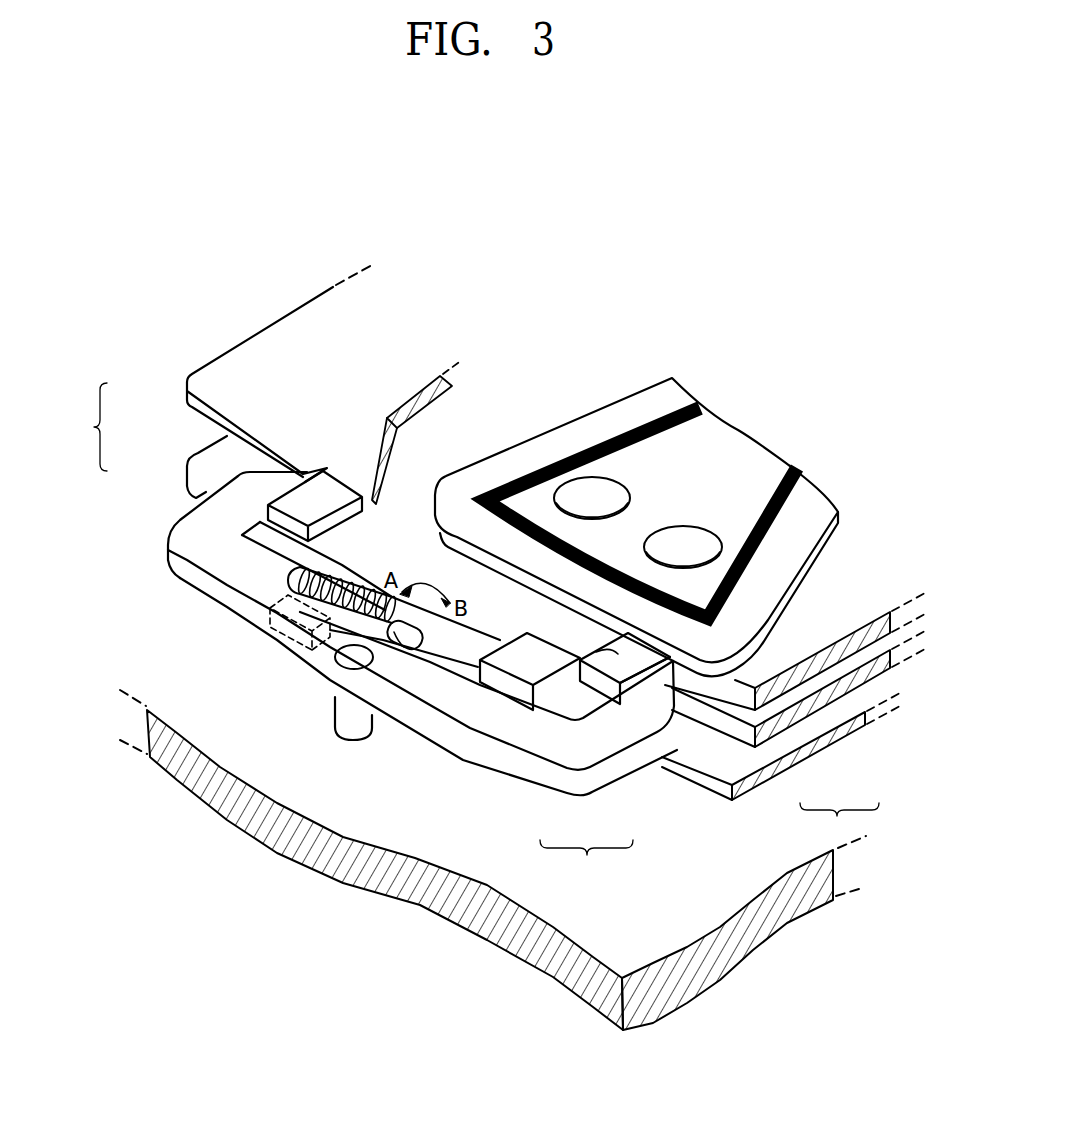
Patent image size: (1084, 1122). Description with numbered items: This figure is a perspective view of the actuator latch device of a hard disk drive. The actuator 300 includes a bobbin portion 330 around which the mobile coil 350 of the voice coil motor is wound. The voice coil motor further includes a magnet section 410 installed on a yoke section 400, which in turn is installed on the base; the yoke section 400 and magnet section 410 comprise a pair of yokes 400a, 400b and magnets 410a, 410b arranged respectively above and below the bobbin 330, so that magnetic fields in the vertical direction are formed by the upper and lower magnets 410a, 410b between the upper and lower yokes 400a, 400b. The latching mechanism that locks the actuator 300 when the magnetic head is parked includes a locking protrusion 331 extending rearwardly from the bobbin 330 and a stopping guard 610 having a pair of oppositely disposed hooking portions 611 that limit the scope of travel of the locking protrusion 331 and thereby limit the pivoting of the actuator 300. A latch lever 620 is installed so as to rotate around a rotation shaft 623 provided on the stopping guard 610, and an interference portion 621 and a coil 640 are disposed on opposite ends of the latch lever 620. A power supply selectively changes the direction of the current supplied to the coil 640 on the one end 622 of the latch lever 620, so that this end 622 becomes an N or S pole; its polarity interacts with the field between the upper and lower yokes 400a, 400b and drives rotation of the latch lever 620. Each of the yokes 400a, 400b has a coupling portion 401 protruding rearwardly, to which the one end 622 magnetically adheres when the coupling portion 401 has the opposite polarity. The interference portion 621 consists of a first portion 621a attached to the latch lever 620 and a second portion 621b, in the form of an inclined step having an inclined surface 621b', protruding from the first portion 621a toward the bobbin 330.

The actuator 300 is at (626, 372).
The bobbin portion 330 is at (762, 597).
The locking protrusion 331 is at (665, 755).
The mobile coil 350 is at (572, 458).
The yoke section 400 is at (79, 427).
The upper yoke 400a is at (186, 393).
The lower yoke 400b is at (186, 478).
The coupling portion 401 is at (302, 492).
The magnet section 410 is at (793, 715).
The upper magnet 410a is at (780, 690).
The lower magnet 410b is at (828, 697).
The stopping guard 610 is at (477, 758).
The hooking portion 611 is at (623, 723).
The latch lever 620 is at (466, 660).
The interference portion 621 is at (575, 754).
The first portion 621a is at (531, 690).
The second portion 621b is at (621, 735).
The inclined surface 621b' is at (574, 630).
The one end of latch lever 622 is at (293, 584).
The rotation shaft 623 is at (412, 650).
The coil 640 is at (352, 576).